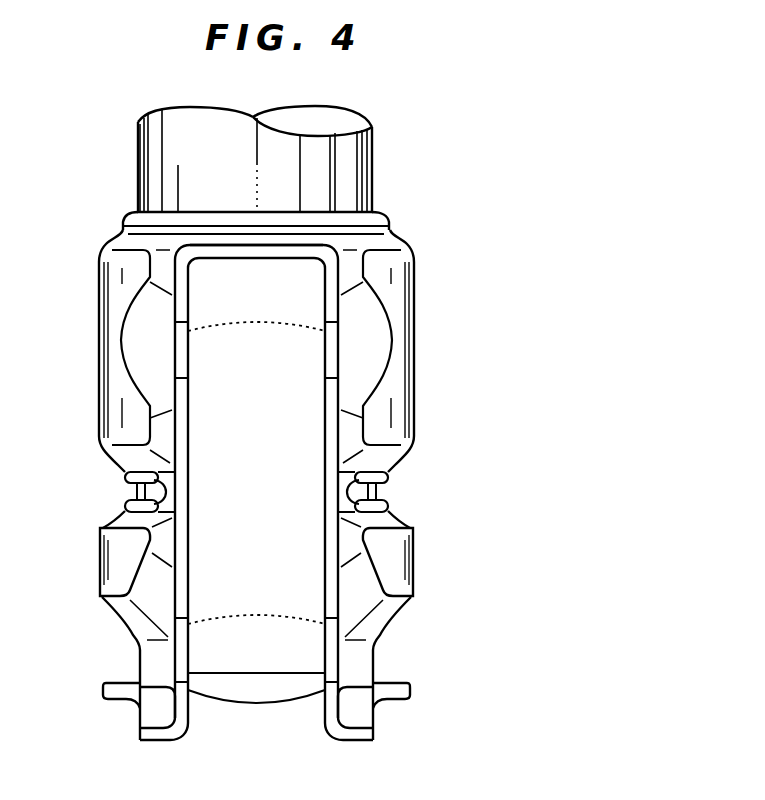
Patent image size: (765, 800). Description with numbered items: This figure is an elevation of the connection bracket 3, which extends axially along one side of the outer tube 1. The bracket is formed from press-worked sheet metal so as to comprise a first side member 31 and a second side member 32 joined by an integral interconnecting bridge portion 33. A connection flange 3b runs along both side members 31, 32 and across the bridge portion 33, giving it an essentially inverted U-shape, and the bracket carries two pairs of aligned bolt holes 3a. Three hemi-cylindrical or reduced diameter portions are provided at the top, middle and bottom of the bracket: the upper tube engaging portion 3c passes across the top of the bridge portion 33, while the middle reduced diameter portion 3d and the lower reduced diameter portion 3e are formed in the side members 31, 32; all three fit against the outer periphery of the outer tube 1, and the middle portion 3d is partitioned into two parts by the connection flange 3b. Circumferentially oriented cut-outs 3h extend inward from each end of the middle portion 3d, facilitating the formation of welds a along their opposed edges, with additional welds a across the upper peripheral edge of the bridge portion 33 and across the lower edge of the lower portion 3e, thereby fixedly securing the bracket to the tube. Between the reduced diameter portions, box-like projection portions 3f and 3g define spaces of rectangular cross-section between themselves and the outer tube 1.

The outer tube 1 is at (362, 148).
The connection bracket 3 is at (412, 246).
The bolt holes 3a is at (256, 472).
The connection flange 3b is at (327, 449).
The upper tube engaging portion 3c is at (327, 230).
The middle reduced diameter portion 3d is at (118, 490).
The lower reduced diameter portion 3e is at (153, 657).
The box-like projection portion 3f is at (113, 317).
The box-like projection portion 3g is at (115, 563).
The cut-outs 3h is at (168, 497).
The first side member 31 is at (90, 368).
The second side member 32 is at (423, 390).
The bridge portion 33 is at (226, 240).
The welds a is at (277, 223).